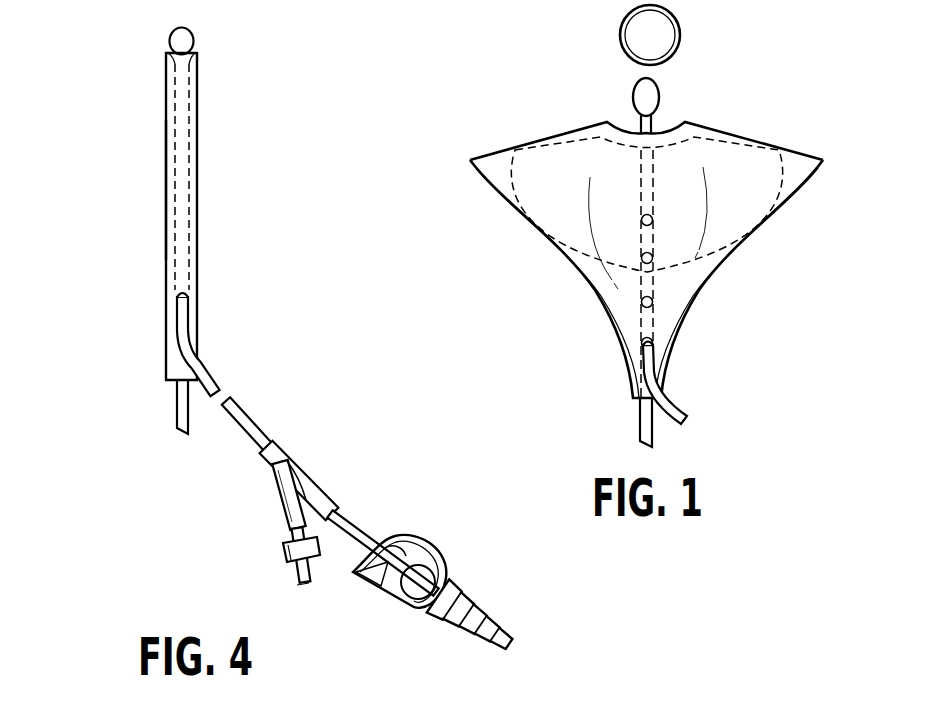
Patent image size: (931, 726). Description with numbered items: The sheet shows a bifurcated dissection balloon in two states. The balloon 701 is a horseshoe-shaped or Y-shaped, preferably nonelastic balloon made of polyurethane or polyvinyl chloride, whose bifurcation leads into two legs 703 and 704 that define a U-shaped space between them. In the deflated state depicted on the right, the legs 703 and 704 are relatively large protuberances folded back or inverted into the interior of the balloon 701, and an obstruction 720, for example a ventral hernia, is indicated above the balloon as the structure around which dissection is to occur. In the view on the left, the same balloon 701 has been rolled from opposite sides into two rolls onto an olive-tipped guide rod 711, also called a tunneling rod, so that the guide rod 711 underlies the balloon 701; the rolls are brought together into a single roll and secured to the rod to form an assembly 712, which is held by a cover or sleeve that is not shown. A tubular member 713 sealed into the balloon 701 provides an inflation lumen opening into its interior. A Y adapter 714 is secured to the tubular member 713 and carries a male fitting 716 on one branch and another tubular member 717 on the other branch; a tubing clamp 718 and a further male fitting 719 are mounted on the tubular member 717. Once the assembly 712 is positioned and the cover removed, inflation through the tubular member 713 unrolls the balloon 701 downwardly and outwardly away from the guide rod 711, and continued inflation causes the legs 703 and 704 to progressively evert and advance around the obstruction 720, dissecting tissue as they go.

In FIG. 4, the balloon 701 is at (200, 183).
In FIG. 1, the balloon 701 is at (668, 282).
In FIG. 1, the leg 703 is at (787, 193).
In FIG. 1, the leg 704 is at (492, 190).
In FIG. 4, the guide rod 711 is at (188, 30).
In FIG. 4, the assembly 712 is at (157, 183).
In FIG. 4, the tubular member 713 is at (215, 373).
In FIG. 1, the tubular member 713 is at (680, 403).
In FIG. 4, the Y adapter 714 is at (328, 492).
In FIG. 4, the male fitting 716 is at (317, 583).
In FIG. 4, the tubular member 717 is at (343, 522).
In FIG. 4, the tubing clamp 718 is at (420, 557).
In FIG. 4, the male fitting 719 is at (480, 615).
In FIG. 1, the obstruction 720 is at (672, 22).